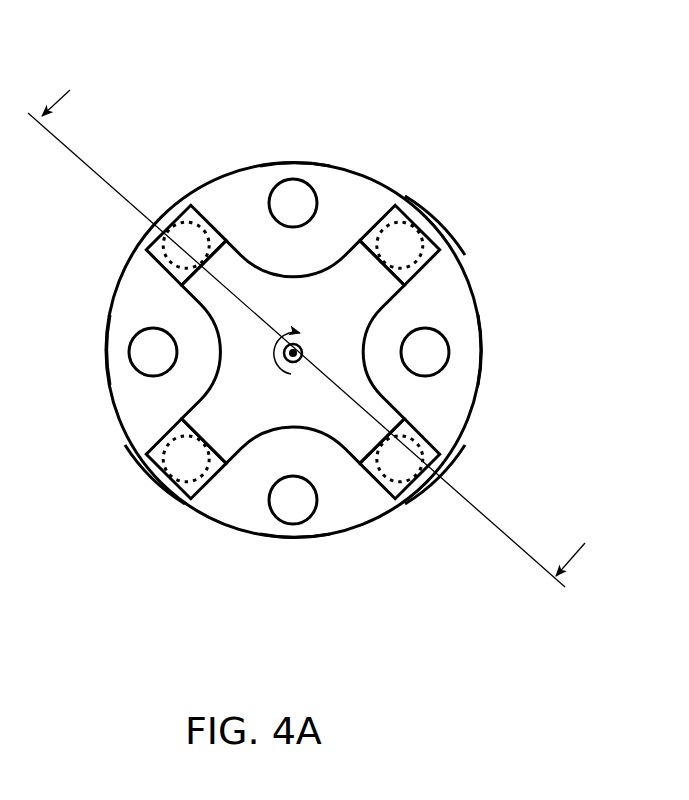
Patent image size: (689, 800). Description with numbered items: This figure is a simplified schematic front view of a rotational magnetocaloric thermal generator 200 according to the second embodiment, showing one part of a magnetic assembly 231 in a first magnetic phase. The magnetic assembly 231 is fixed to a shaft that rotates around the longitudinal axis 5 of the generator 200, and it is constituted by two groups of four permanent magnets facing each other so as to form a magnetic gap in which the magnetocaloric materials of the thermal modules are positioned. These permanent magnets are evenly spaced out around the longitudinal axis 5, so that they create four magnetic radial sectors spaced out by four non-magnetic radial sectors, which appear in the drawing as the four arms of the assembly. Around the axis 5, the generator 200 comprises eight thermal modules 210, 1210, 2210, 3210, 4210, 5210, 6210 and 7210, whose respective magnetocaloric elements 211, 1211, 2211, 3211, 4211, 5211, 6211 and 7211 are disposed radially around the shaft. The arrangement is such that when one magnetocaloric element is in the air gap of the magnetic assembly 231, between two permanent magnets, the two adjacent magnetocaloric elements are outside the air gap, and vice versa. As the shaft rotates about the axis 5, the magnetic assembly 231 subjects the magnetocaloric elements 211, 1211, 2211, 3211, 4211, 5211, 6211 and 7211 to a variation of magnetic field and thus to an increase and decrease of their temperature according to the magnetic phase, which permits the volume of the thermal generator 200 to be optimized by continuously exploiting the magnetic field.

The thermal generator 200 is at (523, 79).
The longitudinal axis 5 is at (300, 356).
The magnetic assembly 231 is at (232, 277).
The thermal module 210 is at (147, 196).
The magnetocaloric element 211 is at (163, 243).
The magnetocaloric element 2211 is at (405, 237).
The magnetocaloric element 4211 is at (402, 462).
The magnetocaloric element 6211 is at (177, 457).
The magnetocaloric element 1211 is at (280, 190).
The magnetocaloric element 3211 is at (435, 352).
The magnetocaloric element 5211 is at (288, 502).
The magnetocaloric element 7211 is at (148, 352).
The thermal module 1210 is at (309, 149).
The thermal module 2210 is at (444, 207).
The thermal module 3210 is at (494, 376).
The thermal module 4210 is at (438, 503).
The thermal module 5210 is at (277, 550).
The thermal module 6210 is at (153, 498).
The thermal module 7210 is at (92, 333).